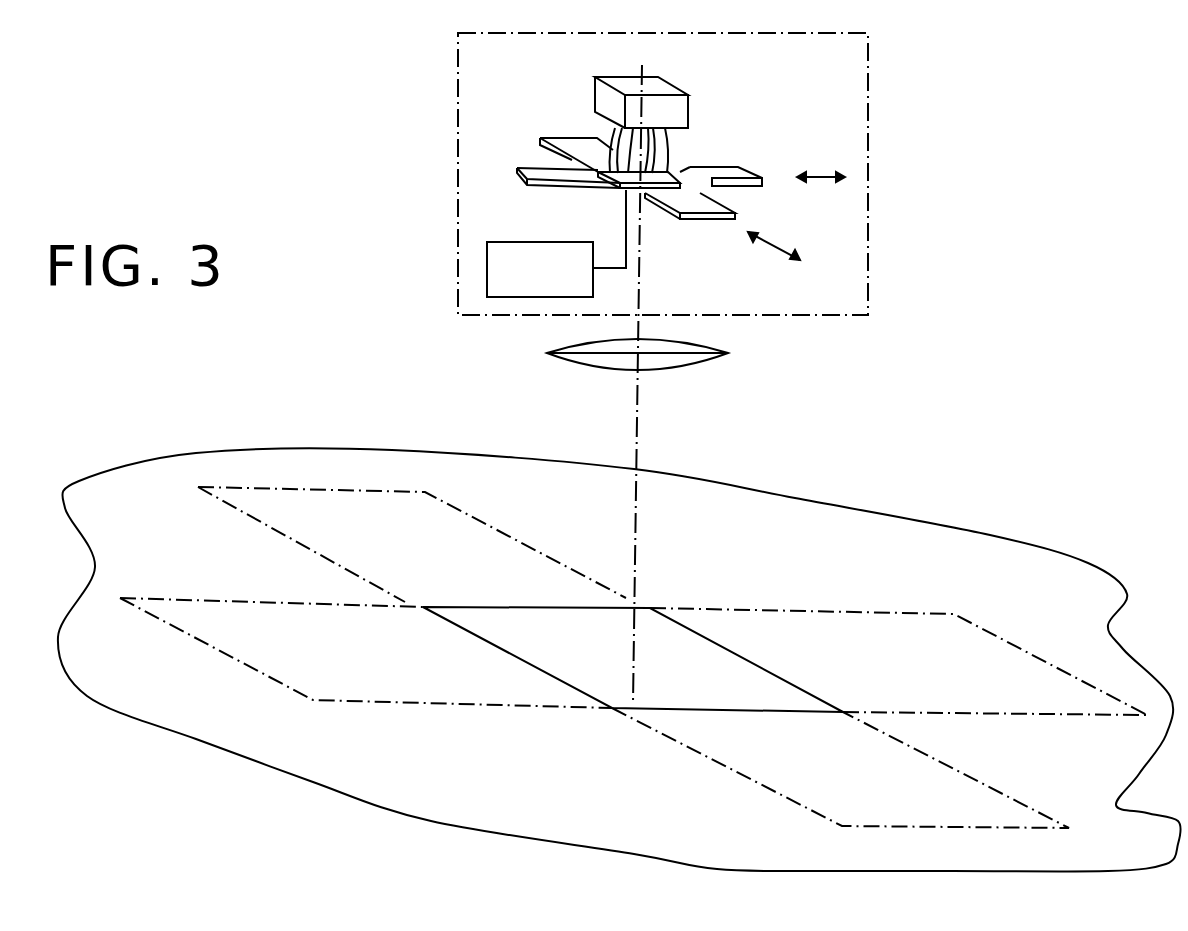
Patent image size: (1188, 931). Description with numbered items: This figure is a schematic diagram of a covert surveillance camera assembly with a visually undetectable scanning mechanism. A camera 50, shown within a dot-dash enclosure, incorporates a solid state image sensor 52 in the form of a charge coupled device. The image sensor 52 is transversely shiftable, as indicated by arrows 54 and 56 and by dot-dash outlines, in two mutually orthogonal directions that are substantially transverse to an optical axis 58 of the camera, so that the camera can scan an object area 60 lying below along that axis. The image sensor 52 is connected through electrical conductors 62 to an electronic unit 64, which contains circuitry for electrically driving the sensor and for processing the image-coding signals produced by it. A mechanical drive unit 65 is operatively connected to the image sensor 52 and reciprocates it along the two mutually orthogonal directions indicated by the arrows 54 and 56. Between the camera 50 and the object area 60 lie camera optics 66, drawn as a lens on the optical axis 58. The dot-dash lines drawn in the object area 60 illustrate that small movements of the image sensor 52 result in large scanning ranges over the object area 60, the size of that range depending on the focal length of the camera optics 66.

The camera 50 is at (458, 150).
The solid state image sensor 52 is at (615, 188).
The arrow 54 is at (773, 247).
The arrow 56 is at (820, 177).
The optical axis 58 is at (633, 443).
The object area 60 is at (341, 770).
The electrical conductors 62 is at (668, 148).
The electronic unit 64 is at (665, 84).
The mechanical drive unit 65 is at (487, 262).
The camera optics 66 is at (676, 364).